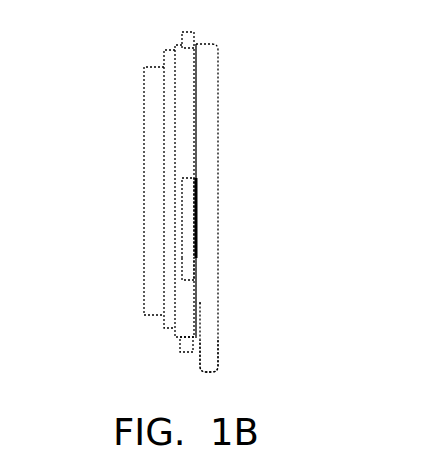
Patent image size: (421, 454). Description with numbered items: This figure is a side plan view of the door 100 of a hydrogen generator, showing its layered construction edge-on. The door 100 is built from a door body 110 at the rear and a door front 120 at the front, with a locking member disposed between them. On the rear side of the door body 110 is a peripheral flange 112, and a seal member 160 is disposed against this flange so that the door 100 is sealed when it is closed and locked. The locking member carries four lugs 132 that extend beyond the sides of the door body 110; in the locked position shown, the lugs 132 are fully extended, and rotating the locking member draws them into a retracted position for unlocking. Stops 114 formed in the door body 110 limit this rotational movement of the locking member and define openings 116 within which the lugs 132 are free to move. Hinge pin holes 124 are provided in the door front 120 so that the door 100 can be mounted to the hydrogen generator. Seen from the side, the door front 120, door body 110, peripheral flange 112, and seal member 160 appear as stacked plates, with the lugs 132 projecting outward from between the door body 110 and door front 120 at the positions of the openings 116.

The door 100 is at (130, 69).
The door body 110 is at (143, 148).
The peripheral flange 112 is at (176, 337).
The stops 114 is at (192, 273).
The openings 116 is at (202, 240).
The door front 120 is at (212, 102).
The hinge pin holes 124 is at (218, 365).
The lugs 132 is at (188, 32).
The seal member 160 is at (164, 327).